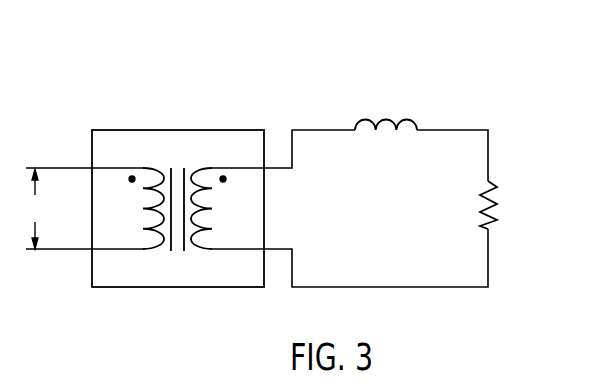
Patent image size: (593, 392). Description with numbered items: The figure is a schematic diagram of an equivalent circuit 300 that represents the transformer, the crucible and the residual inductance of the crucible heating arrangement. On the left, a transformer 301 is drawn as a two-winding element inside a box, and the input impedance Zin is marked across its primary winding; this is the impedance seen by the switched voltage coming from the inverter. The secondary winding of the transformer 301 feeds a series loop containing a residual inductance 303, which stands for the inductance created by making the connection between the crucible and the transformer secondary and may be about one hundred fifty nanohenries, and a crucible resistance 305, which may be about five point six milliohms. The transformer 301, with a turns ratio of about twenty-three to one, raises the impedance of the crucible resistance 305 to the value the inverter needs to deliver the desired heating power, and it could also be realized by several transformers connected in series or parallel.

The equivalent circuit 300 is at (115, 95).
The transformer 301 is at (177, 260).
The residual inductance 303 is at (350, 123).
The crucible resistance 305 is at (498, 225).